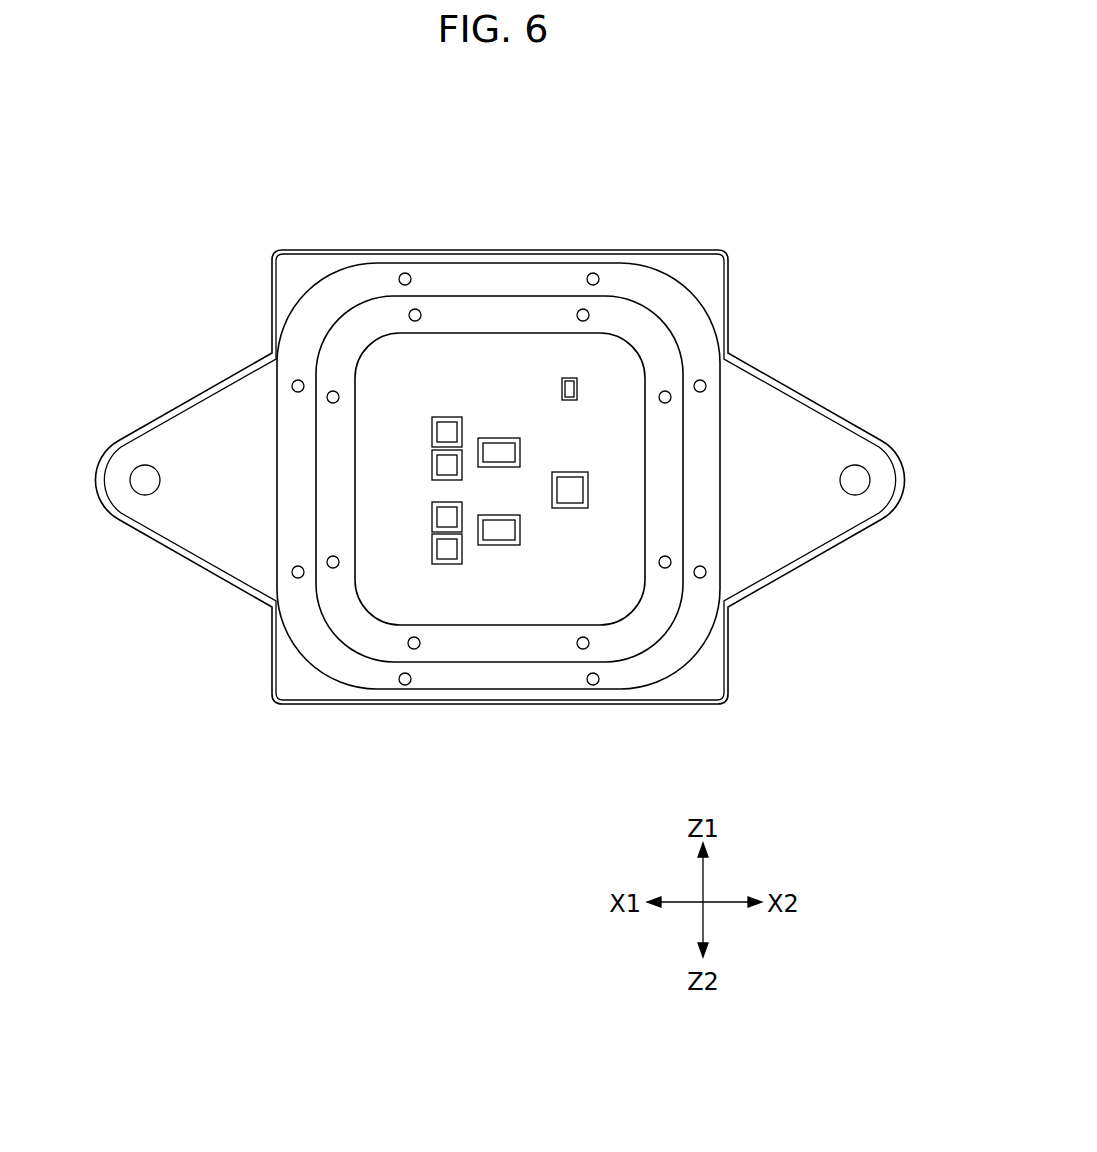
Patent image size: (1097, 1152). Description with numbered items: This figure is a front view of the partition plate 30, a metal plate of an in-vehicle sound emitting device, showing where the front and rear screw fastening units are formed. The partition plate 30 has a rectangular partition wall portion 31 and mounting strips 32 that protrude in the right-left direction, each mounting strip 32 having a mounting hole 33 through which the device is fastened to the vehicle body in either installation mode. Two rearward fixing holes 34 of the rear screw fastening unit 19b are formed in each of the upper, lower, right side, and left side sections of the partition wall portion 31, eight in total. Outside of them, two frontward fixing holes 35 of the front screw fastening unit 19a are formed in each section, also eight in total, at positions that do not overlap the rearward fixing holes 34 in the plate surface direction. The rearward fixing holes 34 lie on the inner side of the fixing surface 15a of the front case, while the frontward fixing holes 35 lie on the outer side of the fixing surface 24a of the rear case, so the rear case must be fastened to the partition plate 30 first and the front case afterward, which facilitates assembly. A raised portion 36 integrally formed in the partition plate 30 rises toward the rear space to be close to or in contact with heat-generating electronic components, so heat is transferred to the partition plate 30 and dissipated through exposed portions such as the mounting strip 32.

The partition plate 30 is at (712, 249).
The partition wall portion 31 is at (388, 588).
The mounting strip 32 is at (801, 448).
The mounting hole 33 is at (855, 492).
The rearward fixing hole 34 is at (499, 479).
The rear screw fastening unit 19b is at (578, 320).
The frontward fixing hole 35 is at (508, 477).
The front screw fastening unit 19a is at (589, 273).
The raised portion 36 is at (508, 527).
The fixing surface of the front case 15a is at (318, 626).
The fixing surface of the rear case 24a is at (653, 603).